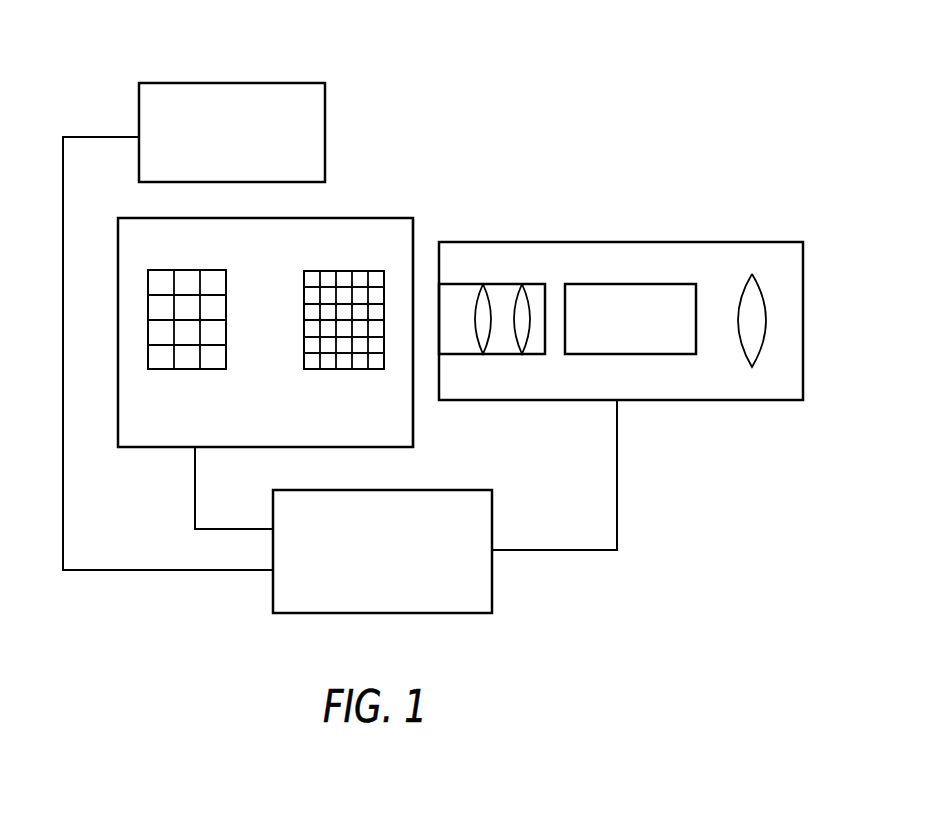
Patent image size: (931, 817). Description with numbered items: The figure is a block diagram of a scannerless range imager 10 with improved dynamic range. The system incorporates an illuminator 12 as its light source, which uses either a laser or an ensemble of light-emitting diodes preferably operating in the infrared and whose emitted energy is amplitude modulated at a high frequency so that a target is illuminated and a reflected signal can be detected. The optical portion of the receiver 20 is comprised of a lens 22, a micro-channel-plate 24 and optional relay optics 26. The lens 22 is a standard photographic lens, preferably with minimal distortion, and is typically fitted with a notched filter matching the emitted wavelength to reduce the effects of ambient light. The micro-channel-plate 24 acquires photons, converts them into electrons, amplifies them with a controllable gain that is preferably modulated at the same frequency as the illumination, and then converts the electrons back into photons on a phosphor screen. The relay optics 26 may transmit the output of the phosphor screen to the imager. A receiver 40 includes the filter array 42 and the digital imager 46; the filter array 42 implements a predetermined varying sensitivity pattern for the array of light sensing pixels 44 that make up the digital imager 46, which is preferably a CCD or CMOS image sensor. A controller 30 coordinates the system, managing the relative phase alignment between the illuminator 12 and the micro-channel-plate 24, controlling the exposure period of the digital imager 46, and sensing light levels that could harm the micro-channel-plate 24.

The scannerless range imager 10 is at (592, 133).
The illuminator 12 is at (260, 83).
The receiver 20 is at (643, 242).
The lens 22 is at (764, 300).
The micro-channel-plate 24 is at (587, 283).
The relay optics 26 is at (505, 354).
The controller 30 is at (492, 577).
The receiver 40 is at (373, 218).
The filter array 42 is at (328, 371).
The light sensing pixels 44 is at (155, 360).
The digital imager 46 is at (188, 371).